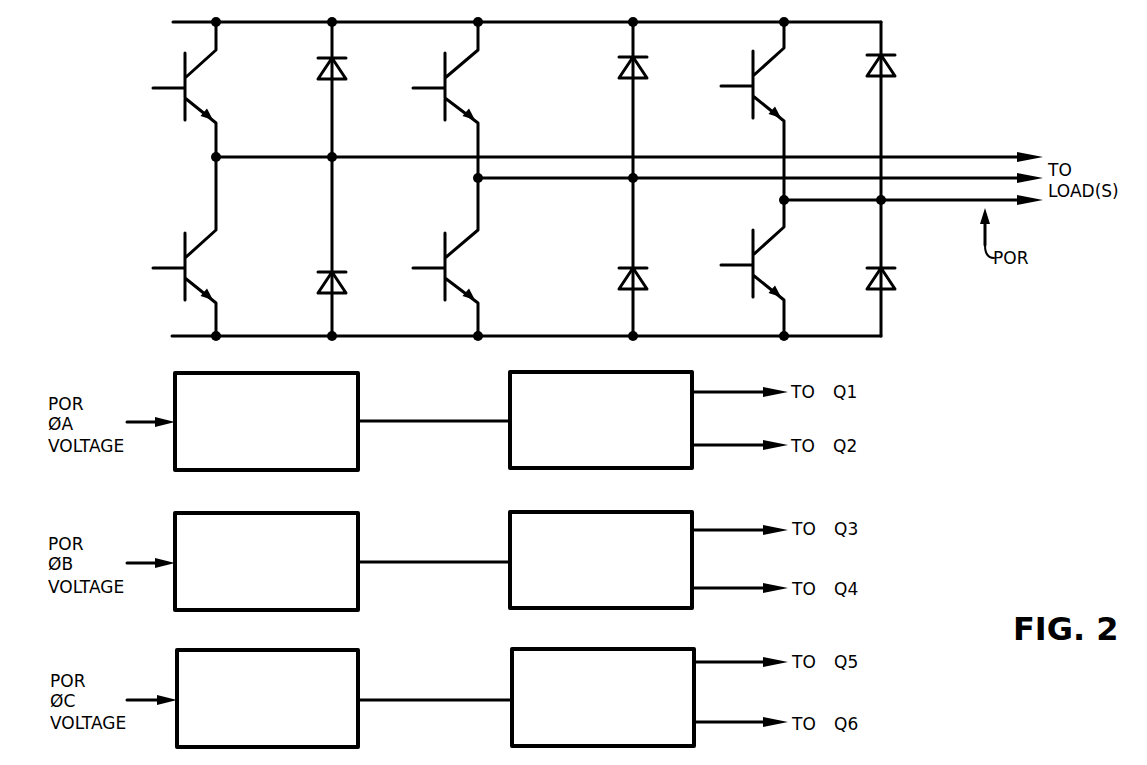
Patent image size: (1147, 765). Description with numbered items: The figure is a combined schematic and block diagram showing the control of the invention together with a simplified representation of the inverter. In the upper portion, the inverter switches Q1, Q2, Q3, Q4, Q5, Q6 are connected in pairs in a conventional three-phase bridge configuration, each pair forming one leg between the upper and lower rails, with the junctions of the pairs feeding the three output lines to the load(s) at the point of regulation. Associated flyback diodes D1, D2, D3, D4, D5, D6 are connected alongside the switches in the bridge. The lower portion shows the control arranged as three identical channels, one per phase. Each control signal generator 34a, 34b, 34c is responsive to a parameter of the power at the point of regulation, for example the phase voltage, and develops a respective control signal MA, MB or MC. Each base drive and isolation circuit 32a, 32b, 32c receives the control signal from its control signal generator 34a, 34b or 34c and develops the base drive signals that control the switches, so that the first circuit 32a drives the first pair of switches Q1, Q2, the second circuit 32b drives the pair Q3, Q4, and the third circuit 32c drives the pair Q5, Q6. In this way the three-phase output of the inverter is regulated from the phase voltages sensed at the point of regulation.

The control signal generator 34a is at (360, 392).
The control signal generator 34b is at (352, 540).
The control signal generator 34c is at (352, 665).
The base drive and isolation circuit 32a is at (512, 440).
The base drive and isolation circuit 32b is at (511, 580).
The base drive and isolation circuit 32c is at (512, 715).
The switch Q1 is at (205, 60).
The switch Q2 is at (200, 293).
The switch Q3 is at (455, 100).
The switch Q4 is at (460, 288).
The switch Q5 is at (762, 98).
The switch Q6 is at (765, 288).
The flyback diode D1 is at (345, 62).
The flyback diode D2 is at (345, 285).
The flyback diode D3 is at (621, 78).
The flyback diode D4 is at (620, 272).
The flyback diode D5 is at (895, 62).
The flyback diode D6 is at (895, 278).